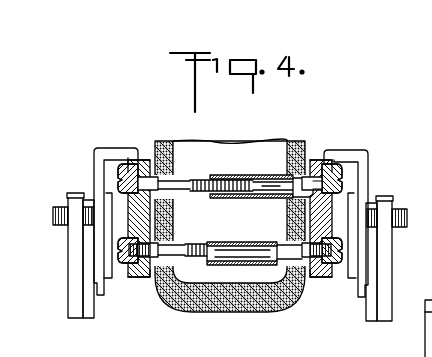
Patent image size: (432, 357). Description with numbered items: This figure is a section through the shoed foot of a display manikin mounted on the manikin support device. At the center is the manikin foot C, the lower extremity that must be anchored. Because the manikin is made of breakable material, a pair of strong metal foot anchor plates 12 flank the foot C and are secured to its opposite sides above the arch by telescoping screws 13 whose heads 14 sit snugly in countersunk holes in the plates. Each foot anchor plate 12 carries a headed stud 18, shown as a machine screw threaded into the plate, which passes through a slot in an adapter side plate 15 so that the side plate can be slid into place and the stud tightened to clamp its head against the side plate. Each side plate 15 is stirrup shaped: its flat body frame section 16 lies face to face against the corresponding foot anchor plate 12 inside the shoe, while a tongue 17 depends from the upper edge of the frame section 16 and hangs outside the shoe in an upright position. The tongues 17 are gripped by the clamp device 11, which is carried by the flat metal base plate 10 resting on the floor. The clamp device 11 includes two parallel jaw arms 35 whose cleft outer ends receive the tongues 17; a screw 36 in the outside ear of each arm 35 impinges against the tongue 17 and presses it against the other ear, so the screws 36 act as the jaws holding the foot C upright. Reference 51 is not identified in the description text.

The base plate 10 is at (431, 308).
The clamp device 11 is at (63, 293).
The foot anchor plates 12 is at (145, 279).
The telescoping screws 13 is at (236, 176).
The heads 14 is at (147, 160).
The adapter side plates 15 is at (123, 143).
The body frame section 16 is at (129, 279).
The tongue 17 is at (104, 244).
The headed studs 18 is at (121, 172).
The jaw arms 35 is at (70, 193).
The screw 36 is at (54, 216).
The support member 51 is at (431, 313).
The manikin foot C is at (230, 313).